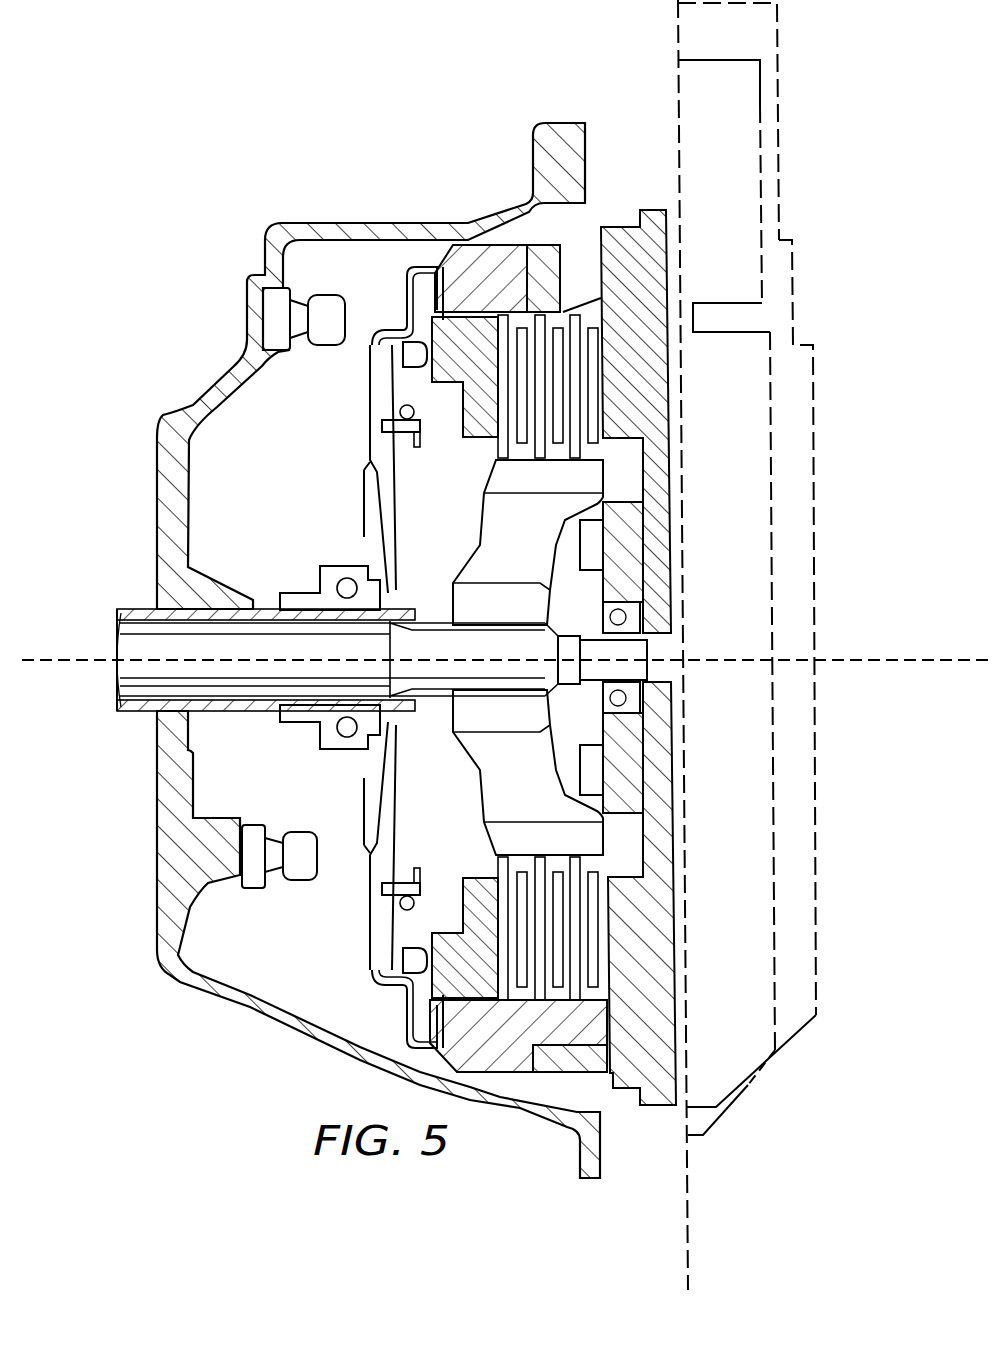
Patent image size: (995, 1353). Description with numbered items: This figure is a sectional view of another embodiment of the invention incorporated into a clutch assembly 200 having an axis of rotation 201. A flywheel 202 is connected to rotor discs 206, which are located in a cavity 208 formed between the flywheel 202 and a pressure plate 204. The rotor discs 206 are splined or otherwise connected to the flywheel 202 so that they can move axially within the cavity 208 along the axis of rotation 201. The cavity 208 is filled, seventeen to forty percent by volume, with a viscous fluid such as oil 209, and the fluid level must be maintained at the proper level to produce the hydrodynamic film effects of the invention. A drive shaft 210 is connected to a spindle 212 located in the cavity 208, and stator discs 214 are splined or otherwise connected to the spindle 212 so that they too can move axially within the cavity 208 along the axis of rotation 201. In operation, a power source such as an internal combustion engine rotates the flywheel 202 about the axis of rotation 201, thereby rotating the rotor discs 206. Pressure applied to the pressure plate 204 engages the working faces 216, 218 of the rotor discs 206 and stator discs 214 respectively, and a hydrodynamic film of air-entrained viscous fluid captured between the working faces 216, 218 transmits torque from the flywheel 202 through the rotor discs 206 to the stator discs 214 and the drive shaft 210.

The clutch assembly 200 is at (277, 128).
The axis of rotation 201 is at (836, 658).
The flywheel 202 is at (650, 262).
The pressure plate 204 is at (410, 357).
The rotor discs 206 is at (600, 360).
The cavity 208 is at (463, 477).
The oil 209 is at (408, 915).
The drive shaft 210 is at (118, 628).
The spindle 212 is at (543, 561).
The stator discs 214 is at (588, 402).
The working faces of the rotor disc 216 is at (566, 310).
The working faces of the stator discs 218 is at (565, 350).